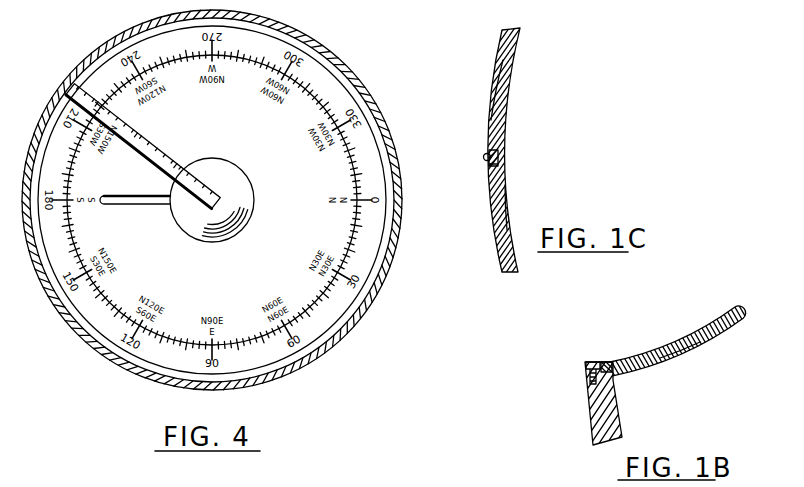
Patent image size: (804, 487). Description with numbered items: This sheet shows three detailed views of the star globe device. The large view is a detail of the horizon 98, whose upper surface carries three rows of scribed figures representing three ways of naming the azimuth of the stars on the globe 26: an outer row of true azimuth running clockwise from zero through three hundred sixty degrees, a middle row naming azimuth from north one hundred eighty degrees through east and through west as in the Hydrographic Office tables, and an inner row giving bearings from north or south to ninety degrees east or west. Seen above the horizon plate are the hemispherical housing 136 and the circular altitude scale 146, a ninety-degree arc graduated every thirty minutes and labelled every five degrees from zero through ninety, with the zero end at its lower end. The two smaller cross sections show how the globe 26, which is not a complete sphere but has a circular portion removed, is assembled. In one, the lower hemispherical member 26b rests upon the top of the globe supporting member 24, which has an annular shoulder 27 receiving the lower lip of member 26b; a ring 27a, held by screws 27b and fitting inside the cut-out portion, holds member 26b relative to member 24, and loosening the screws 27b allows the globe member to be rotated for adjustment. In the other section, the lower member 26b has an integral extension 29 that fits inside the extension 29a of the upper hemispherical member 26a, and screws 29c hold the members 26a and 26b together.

In FIG. 1B, the globe supporting member 24 is at (621, 422).
In FIG. 1C, the spherical globe 26 is at (492, 74).
In FIG. 1B, the spherical globe 26 is at (707, 328).
In FIG. 1C, the upper hemispherical member 26a is at (508, 93).
In FIG. 4, the lower hemispherical member 26b is at (333, 344).
In FIG. 1C, the lower hemispherical member 26b is at (506, 181).
In FIG. 1B, the lower hemispherical member 26b is at (696, 345).
In FIG. 1B, the annular shoulder 27 is at (612, 380).
In FIG. 1B, the ring 27a is at (605, 362).
In FIG. 1B, the screws 27b is at (591, 362).
In FIG. 1C, the integral extension 29 is at (500, 150).
In FIG. 1C, the extension of upper member 29a is at (494, 166).
In FIG. 1C, the screws 29c is at (485, 155).
In FIG. 4, the horizon plate 98 is at (380, 233).
In FIG. 4, the hemispherical housing 136 is at (243, 183).
In FIG. 4, the circular altitude scale 146 is at (156, 149).